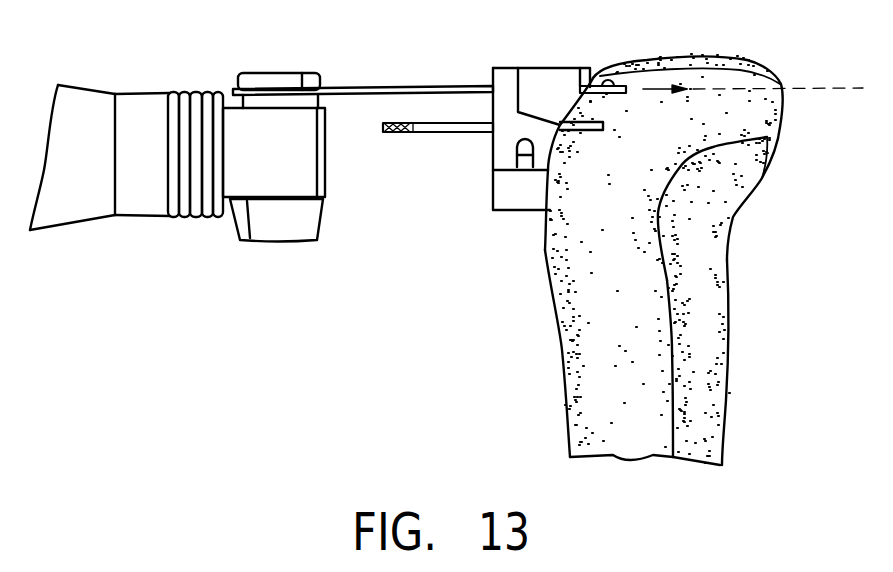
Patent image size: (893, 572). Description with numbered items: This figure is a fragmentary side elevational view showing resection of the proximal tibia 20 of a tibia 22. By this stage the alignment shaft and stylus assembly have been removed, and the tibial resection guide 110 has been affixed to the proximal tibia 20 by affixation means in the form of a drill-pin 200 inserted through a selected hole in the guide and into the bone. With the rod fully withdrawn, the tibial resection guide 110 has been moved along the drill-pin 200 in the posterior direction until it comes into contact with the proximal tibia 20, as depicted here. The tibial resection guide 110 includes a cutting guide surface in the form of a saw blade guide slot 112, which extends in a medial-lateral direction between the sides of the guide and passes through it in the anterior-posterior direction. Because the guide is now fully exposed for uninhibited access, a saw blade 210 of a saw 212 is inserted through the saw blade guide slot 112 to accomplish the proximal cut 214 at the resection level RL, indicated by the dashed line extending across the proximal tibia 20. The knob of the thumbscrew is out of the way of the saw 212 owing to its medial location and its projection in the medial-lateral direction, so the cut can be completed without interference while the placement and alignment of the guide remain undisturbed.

The proximal tibia 20 is at (773, 125).
The tibia 22 is at (573, 387).
The tibial resection guide 110 is at (563, 77).
The saw blade guide slot 112 is at (503, 86).
The drill-pin 200 is at (425, 133).
The saw blade 210 is at (430, 88).
The saw 212 is at (65, 212).
The proximal cut 214 is at (622, 96).
The resection level RL is at (823, 87).